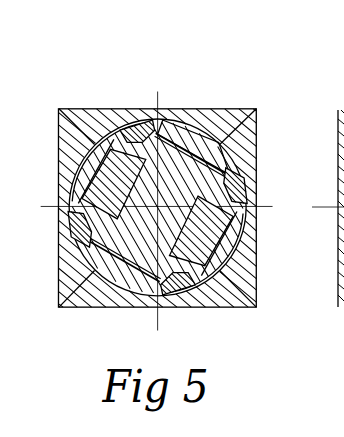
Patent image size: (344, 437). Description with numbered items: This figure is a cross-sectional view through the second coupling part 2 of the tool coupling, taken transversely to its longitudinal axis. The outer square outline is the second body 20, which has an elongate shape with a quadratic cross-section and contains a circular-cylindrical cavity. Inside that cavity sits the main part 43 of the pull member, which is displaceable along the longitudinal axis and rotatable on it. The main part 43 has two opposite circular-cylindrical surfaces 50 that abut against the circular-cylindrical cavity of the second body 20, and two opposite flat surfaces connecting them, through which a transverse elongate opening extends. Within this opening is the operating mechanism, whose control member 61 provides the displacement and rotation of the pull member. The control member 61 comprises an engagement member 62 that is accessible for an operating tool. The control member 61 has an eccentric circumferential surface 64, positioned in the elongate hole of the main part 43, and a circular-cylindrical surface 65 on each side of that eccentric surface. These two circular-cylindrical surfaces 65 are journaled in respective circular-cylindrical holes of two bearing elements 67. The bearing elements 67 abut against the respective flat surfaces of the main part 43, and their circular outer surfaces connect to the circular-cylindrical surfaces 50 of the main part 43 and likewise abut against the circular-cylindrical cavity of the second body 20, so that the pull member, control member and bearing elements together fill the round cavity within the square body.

The second coupling part 2 is at (157, 197).
The second body 20 is at (85, 108).
The main part 43 is at (167, 122).
The circular-cylindrical surfaces 50 is at (240, 145).
The control member 61 is at (72, 199).
The engagement member 62 is at (100, 162).
The eccentric circumferential surface 64 is at (203, 158).
The circular-cylindrical surfaces 65 is at (132, 135).
The bearing elements 67 is at (72, 236).